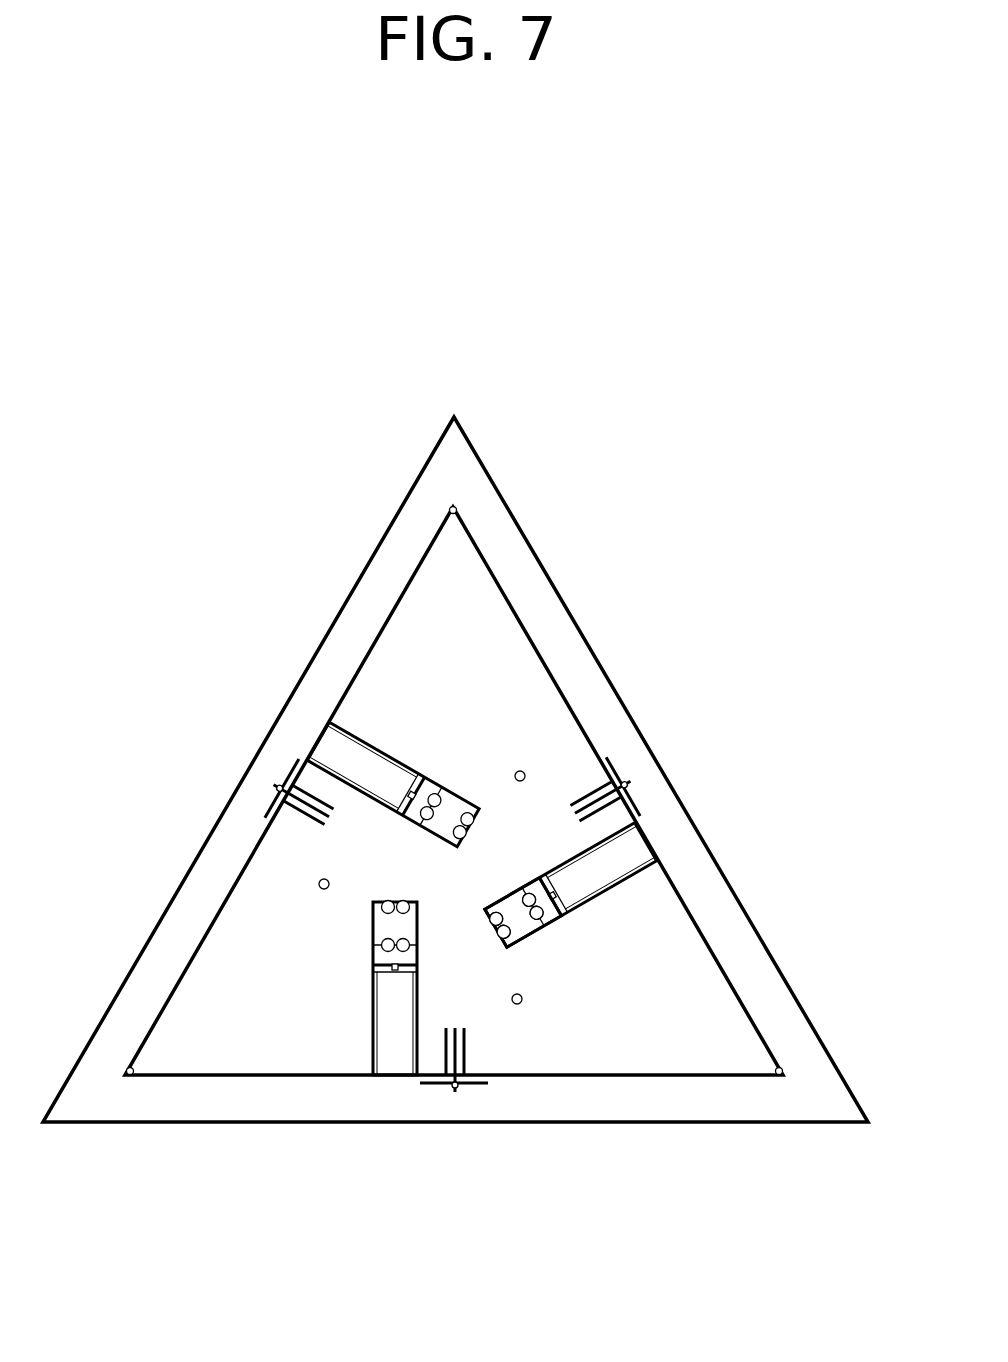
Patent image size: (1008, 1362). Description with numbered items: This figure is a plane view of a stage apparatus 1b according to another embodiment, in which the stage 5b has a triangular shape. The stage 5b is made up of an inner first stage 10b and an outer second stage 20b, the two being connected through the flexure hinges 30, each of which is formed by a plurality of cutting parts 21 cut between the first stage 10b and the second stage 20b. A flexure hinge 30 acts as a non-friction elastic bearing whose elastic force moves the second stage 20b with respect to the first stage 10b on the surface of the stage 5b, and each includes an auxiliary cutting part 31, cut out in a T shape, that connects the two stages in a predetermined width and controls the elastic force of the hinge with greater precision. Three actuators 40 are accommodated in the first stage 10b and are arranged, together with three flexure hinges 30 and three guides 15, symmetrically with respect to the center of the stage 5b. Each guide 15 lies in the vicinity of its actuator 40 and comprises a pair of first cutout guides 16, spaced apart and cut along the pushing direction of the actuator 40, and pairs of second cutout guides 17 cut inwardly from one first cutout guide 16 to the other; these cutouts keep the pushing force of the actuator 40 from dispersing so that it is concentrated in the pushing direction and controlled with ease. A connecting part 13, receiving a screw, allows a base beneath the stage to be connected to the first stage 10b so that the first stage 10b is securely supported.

The stage apparatus 1b is at (545, 475).
The stage 5b is at (455, 769).
The second stage 20b is at (520, 545).
The first stage 10b is at (518, 652).
The cutting parts 21 is at (158, 1013).
The connecting part 13 is at (522, 770).
The actuator 40 is at (332, 750).
The guide 15 is at (235, 1205).
The first cutout guides 16 is at (512, 947).
The second cutout guides 17 is at (540, 925).
The flexure hinge 30 is at (290, 819).
The auxiliary cutting part 31 is at (620, 768).